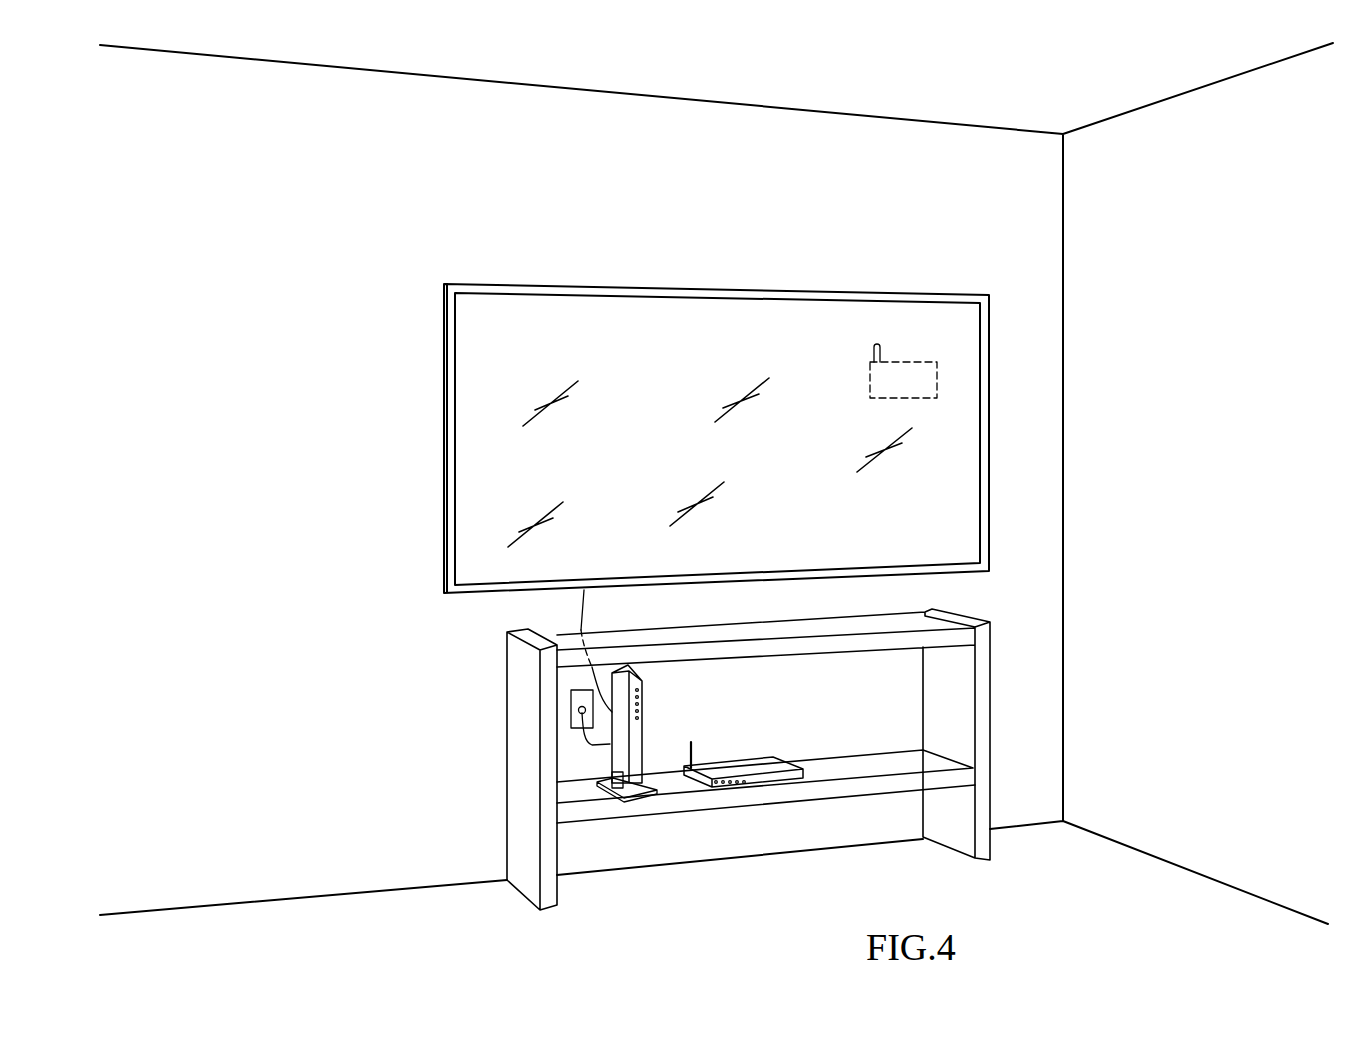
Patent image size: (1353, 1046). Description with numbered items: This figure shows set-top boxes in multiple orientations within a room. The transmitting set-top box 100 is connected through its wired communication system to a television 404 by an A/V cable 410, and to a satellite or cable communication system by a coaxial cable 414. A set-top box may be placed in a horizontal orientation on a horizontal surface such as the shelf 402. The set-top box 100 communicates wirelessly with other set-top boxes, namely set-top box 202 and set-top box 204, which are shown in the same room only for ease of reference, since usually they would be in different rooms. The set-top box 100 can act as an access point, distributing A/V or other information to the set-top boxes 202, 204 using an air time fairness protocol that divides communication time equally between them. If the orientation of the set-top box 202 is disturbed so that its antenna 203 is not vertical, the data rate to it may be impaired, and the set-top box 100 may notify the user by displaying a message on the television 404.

The set-top box 100 is at (648, 700).
The set-top box 202 is at (772, 748).
The antenna 203 is at (702, 744).
The set-top box 204 is at (947, 374).
The shelf 402 is at (985, 704).
The television 404 is at (843, 288).
The A/V cable 410 is at (584, 612).
The coaxial cable 414 is at (592, 745).